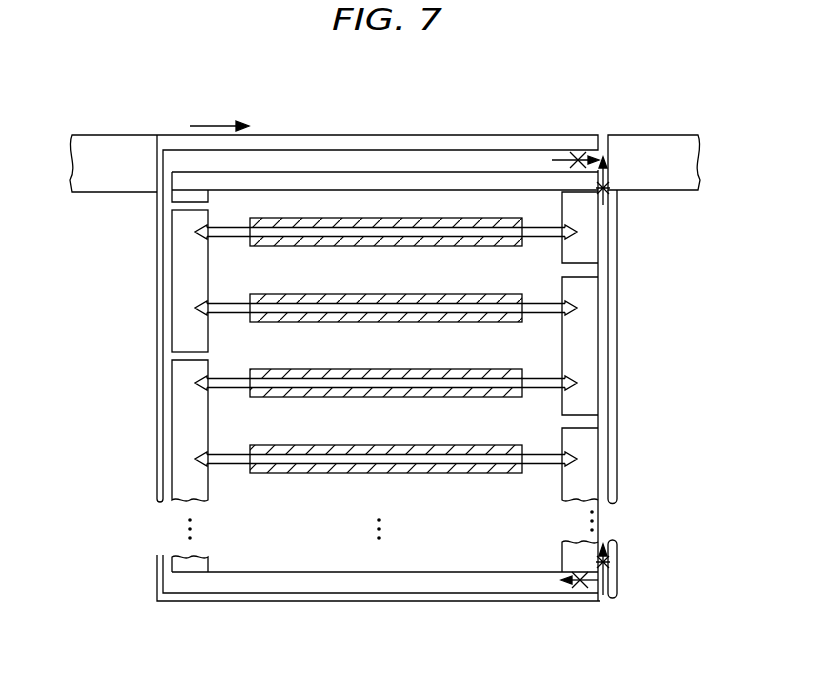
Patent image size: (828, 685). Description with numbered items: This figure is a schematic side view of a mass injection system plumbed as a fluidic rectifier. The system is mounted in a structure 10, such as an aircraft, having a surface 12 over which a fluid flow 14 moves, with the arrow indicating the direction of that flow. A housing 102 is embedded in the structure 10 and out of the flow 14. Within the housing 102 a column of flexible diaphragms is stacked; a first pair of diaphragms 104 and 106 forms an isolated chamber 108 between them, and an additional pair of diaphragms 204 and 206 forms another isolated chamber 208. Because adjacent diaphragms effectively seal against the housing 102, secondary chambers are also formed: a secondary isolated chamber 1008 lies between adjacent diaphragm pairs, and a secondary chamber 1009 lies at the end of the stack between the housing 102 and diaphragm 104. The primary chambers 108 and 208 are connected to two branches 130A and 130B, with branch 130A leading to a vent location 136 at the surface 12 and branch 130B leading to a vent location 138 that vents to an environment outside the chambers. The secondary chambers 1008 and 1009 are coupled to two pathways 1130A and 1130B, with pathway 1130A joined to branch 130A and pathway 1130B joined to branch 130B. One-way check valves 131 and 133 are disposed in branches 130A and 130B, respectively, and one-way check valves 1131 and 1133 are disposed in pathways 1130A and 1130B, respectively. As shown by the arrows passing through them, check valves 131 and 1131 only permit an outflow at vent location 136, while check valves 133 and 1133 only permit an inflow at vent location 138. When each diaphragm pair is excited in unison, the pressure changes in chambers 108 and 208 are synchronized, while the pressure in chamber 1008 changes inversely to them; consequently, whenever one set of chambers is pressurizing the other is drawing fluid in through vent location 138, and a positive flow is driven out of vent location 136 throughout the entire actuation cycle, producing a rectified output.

The structure 10 is at (92, 140).
The surface 12 is at (295, 135).
The fluid flow 14 is at (205, 124).
The housing 102 is at (617, 351).
The diaphragm 104 is at (450, 233).
The diaphragm 106 is at (493, 310).
The isolated chamber 108 is at (393, 262).
The secondary isolated chamber 1008 is at (250, 345).
The secondary chamber 1009 is at (328, 203).
The pathway 1130A is at (168, 268).
The pathway 1130B is at (168, 455).
The branch 130A is at (600, 226).
The branch 130B is at (602, 540).
The first check valve 131 is at (610, 188).
The second check valve 133 is at (603, 568).
The vent location 136 is at (600, 142).
The vent location 138 is at (605, 601).
The one-way check valve 1131 is at (578, 152).
The one-way check valve 1133 is at (578, 598).
The diaphragm 204 is at (465, 382).
The diaphragm 206 is at (342, 460).
The isolated chamber 208 is at (282, 427).